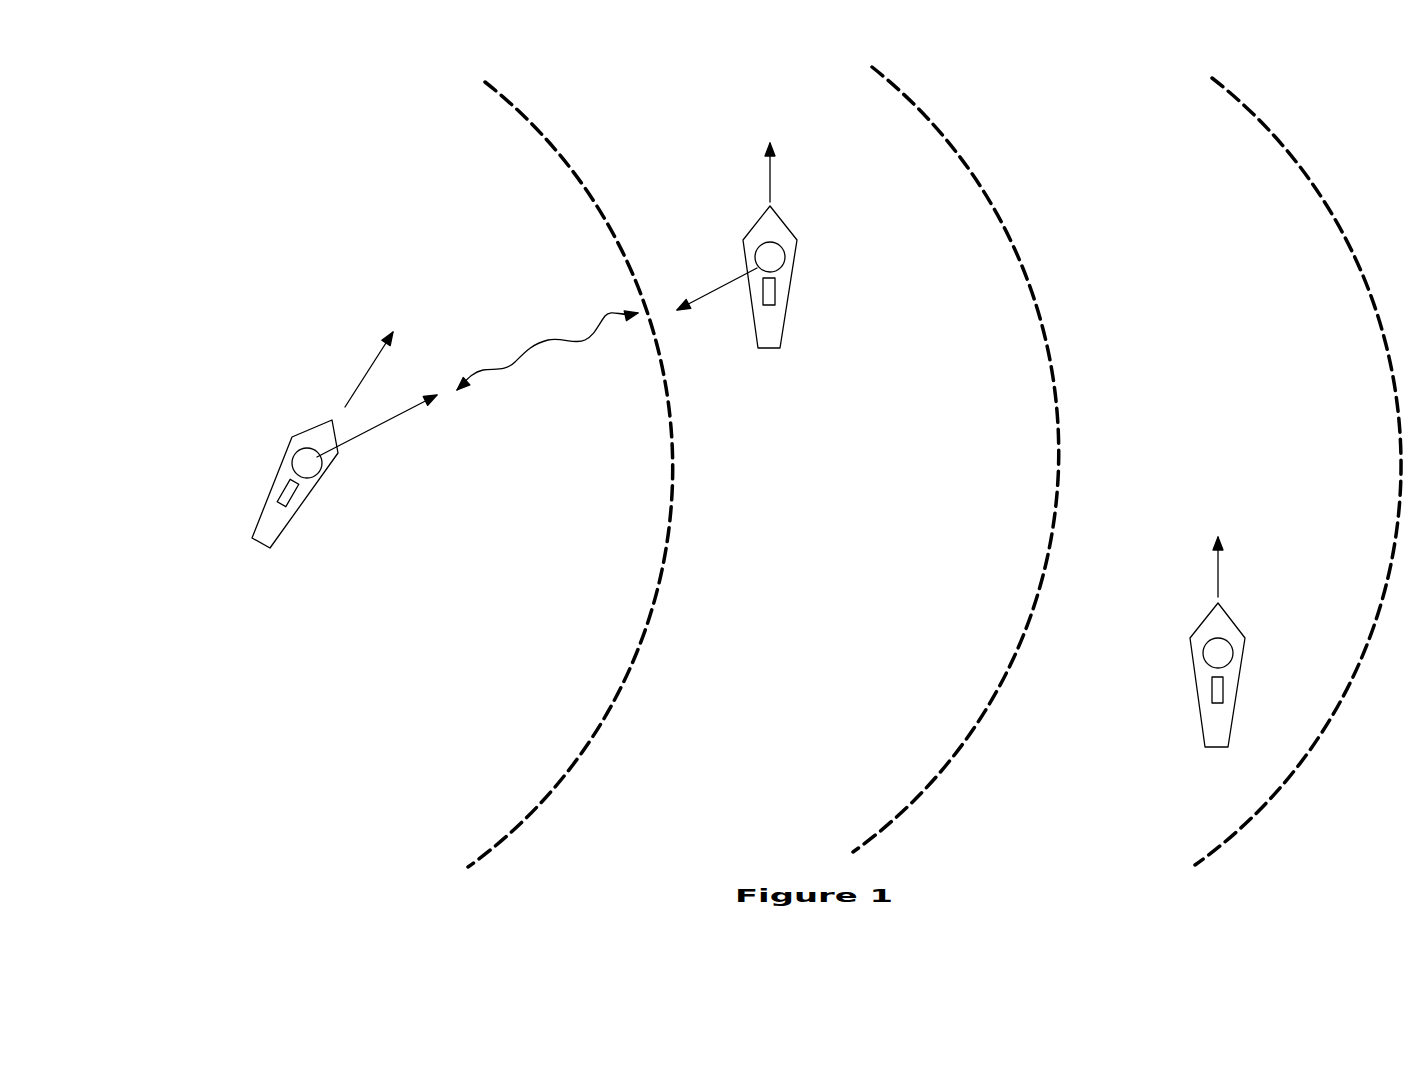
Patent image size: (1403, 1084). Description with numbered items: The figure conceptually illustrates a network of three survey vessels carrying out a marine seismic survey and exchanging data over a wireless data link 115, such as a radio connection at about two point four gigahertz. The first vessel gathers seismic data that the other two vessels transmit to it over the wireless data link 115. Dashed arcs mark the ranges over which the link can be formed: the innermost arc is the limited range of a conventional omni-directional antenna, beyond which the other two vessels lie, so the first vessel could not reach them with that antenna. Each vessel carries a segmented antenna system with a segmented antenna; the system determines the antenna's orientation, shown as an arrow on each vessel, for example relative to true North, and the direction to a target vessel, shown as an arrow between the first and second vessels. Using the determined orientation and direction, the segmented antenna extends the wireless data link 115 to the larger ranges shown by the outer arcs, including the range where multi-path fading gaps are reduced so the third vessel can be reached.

The wireless data link 115 is at (585, 342).